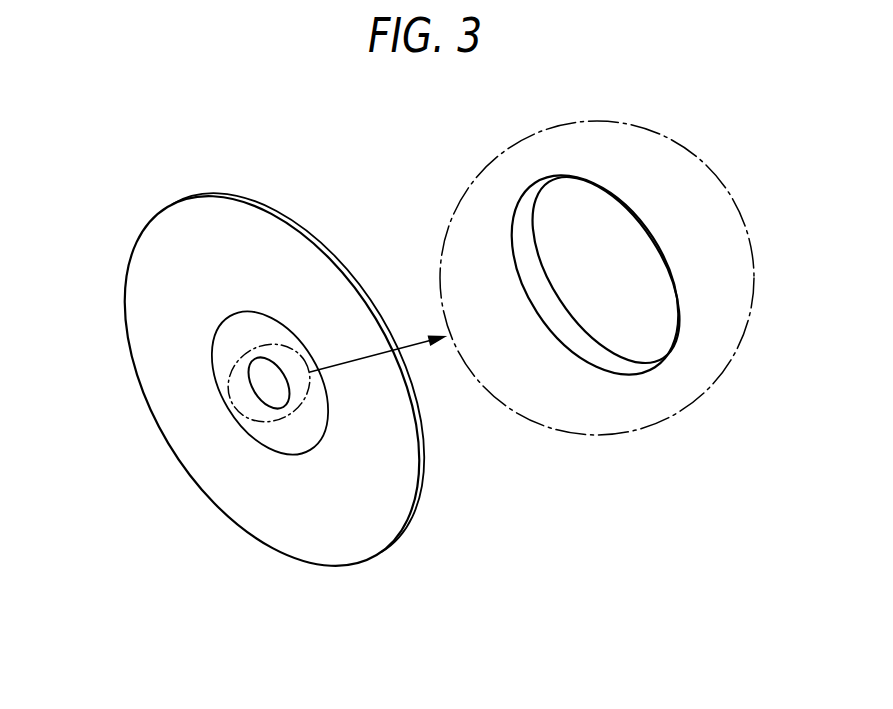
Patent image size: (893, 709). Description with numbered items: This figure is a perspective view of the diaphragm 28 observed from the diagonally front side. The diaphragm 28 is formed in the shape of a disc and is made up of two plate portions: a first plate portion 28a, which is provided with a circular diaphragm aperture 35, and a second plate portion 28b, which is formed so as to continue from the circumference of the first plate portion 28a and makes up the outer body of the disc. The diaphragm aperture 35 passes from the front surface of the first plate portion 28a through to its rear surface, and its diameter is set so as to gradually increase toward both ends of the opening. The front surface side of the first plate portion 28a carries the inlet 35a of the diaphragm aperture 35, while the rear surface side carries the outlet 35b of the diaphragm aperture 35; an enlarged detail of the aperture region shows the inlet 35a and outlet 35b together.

The diaphragm 28 is at (116, 178).
The first plate portion 28a is at (240, 320).
The second plate portion 28b is at (368, 513).
The diaphragm aperture 35 is at (272, 362).
The inlet 35a is at (553, 333).
The outlet 35b is at (537, 232).